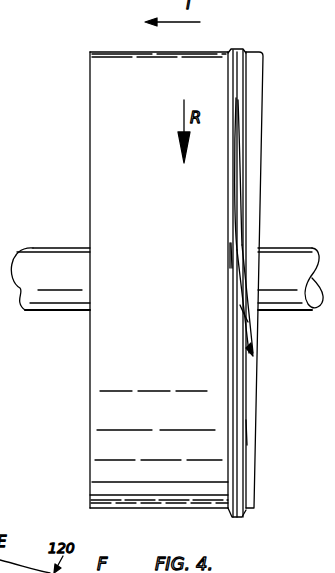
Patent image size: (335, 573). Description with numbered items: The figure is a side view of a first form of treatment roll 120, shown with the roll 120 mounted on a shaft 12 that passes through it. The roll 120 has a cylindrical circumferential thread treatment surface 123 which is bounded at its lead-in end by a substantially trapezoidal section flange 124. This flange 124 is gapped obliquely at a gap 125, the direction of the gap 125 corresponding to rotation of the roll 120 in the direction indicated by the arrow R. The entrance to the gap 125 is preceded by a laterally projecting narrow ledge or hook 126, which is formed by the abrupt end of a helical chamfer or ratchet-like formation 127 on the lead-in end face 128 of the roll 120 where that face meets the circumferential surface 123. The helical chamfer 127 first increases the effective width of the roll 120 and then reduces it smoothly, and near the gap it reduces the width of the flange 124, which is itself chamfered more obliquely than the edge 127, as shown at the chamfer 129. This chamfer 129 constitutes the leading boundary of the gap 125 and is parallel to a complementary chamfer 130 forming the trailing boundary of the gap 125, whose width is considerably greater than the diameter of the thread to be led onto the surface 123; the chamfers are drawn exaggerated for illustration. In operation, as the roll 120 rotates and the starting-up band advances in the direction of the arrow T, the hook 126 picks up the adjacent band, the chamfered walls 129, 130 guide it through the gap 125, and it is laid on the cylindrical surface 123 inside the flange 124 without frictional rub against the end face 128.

The pipe 12 is at (54, 262).
The treatment roll 120 is at (87, 122).
The cylindrical circumferential thread treatment surface 123 is at (122, 68).
The flange 124 is at (234, 47).
The gap 125 is at (232, 257).
The narrow ledge or hook 126 is at (254, 356).
The helical chamfer 127 is at (248, 433).
The lead-in end face 128 is at (257, 112).
The chamfer 129 is at (244, 314).
The complementary chamfer 130 is at (233, 214).